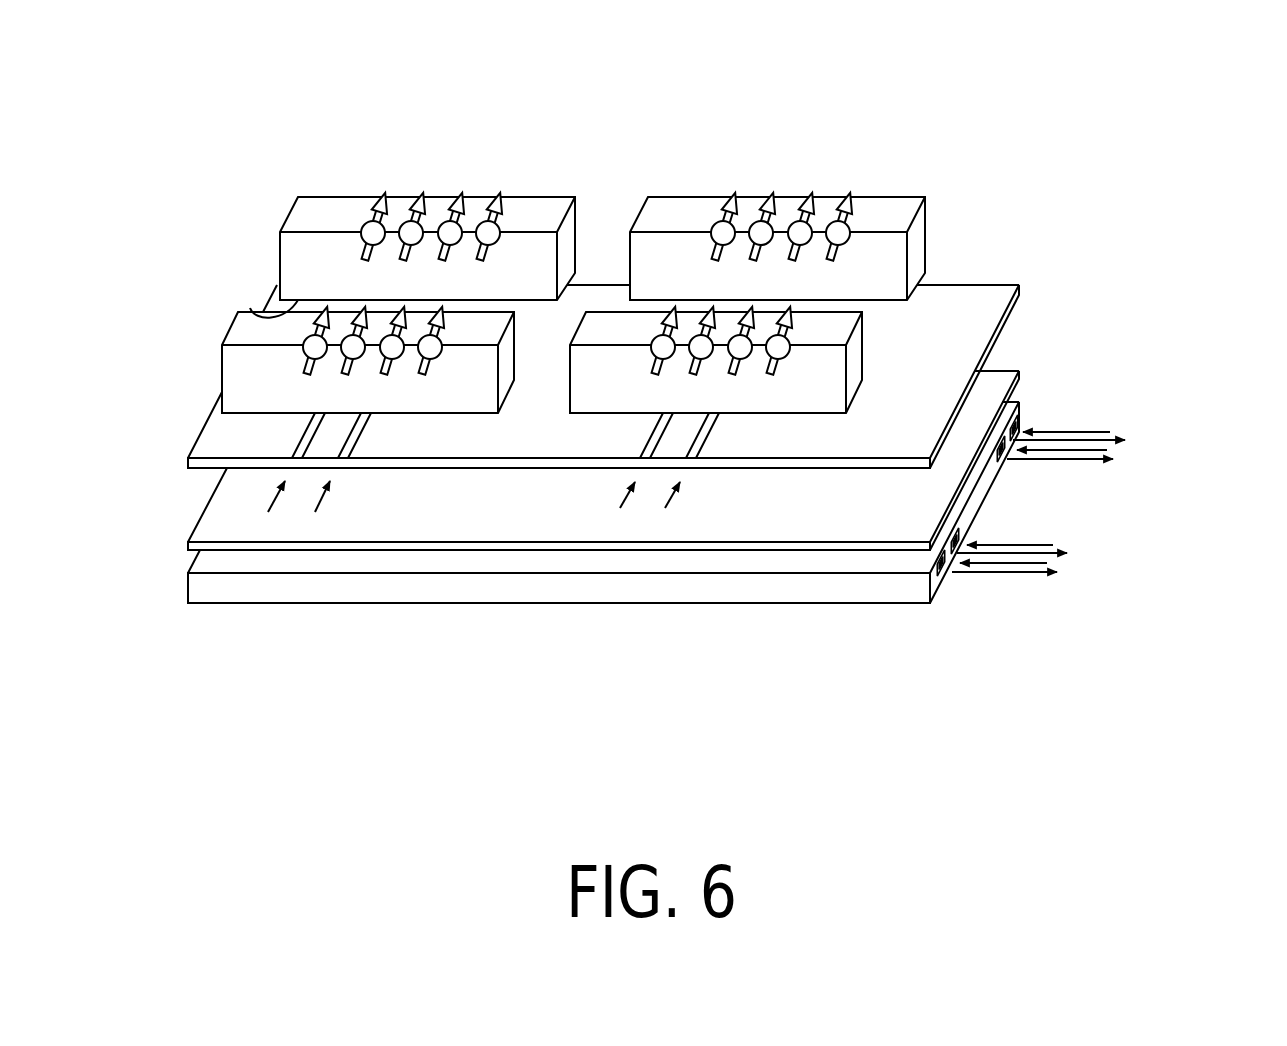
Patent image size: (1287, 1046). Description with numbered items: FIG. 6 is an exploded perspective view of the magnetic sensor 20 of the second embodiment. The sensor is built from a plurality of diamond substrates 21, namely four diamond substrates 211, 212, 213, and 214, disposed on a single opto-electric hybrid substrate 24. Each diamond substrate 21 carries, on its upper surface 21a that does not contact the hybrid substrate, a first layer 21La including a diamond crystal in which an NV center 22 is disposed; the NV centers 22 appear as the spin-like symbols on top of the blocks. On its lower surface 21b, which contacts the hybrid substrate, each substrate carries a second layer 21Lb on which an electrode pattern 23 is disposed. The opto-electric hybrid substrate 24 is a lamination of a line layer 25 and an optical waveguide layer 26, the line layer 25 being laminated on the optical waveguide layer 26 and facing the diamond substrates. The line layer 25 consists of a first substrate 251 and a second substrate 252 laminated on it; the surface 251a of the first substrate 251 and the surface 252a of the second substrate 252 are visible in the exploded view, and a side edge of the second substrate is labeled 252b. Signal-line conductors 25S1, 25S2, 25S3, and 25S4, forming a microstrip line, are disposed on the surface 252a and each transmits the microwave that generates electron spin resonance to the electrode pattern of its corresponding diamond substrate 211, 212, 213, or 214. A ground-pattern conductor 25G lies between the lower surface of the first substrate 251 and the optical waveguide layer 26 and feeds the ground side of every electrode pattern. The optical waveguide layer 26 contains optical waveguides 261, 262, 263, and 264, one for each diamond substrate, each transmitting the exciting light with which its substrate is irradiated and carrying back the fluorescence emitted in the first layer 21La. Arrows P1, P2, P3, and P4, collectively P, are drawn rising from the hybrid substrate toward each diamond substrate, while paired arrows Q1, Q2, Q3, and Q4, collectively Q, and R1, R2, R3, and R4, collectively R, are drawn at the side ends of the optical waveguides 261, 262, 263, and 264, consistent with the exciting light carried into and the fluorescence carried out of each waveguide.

The magnetic sensor 20 is at (1001, 142).
The diamond substrate 21 is at (555, 258).
The diamond substrate 211 is at (539, 206).
The diamond substrate 212 is at (873, 207).
The diamond substrate 213 is at (232, 368).
The diamond substrate 214 is at (862, 353).
The surface 21a is at (296, 207).
The surface 21b is at (272, 303).
The first layer 21La is at (325, 205).
The second layer 21Lb is at (250, 308).
The NV center 22 is at (389, 181).
The electrode pattern 23 is at (572, 292).
The opto-electric hybrid substrate 24 is at (150, 452).
The line layer 25 is at (102, 388).
The first substrate 251 is at (223, 503).
The surface 251a is at (447, 520).
The second substrate 252 is at (217, 430).
The surface 252a is at (968, 293).
The side edge of upper plate 252b is at (1013, 318).
The conductor 25S1 is at (296, 445).
The conductor 25S2 is at (643, 450).
The conductor 25S3 is at (353, 445).
The conductor 25S4 is at (703, 440).
The conductor 25G is at (478, 565).
The optical waveguide layer 26 is at (195, 593).
The optical waveguide 261 is at (1021, 424).
The optical waveguide 262 is at (1003, 460).
The optical waveguide 263 is at (962, 535).
The optical waveguide 264 is at (945, 577).
The light path P is at (446, 597).
The first light path P1 is at (283, 510).
The second light path P2 is at (628, 505).
The third light path P3 is at (330, 513).
The fourth light path P4 is at (675, 505).
The inflow Q is at (1107, 490).
The first inflow Q1 is at (1112, 432).
The second inflow Q2 is at (1110, 450).
The third inflow Q3 is at (1055, 545).
The fourth inflow Q4 is at (1050, 563).
The outflow R is at (1089, 518).
The first outflow R1 is at (1127, 440).
The second outflow R2 is at (1115, 459).
The third outflow R3 is at (1070, 553).
The fourth outflow R4 is at (1060, 572).